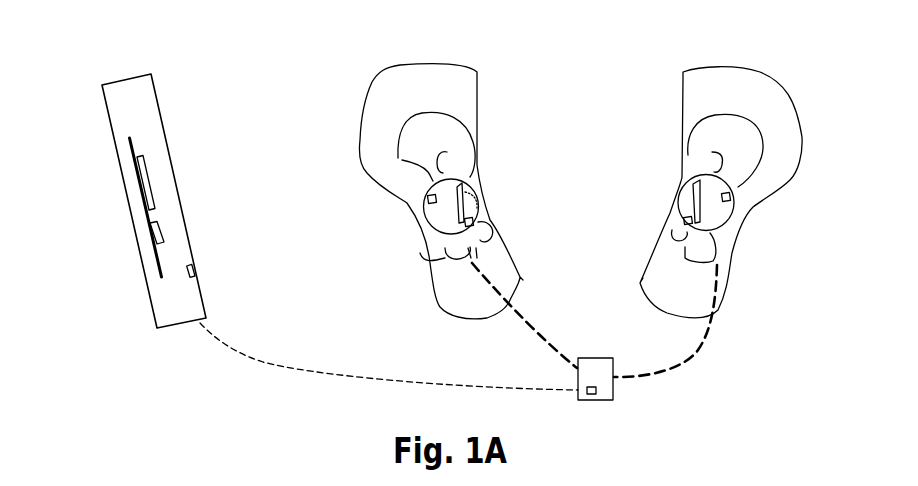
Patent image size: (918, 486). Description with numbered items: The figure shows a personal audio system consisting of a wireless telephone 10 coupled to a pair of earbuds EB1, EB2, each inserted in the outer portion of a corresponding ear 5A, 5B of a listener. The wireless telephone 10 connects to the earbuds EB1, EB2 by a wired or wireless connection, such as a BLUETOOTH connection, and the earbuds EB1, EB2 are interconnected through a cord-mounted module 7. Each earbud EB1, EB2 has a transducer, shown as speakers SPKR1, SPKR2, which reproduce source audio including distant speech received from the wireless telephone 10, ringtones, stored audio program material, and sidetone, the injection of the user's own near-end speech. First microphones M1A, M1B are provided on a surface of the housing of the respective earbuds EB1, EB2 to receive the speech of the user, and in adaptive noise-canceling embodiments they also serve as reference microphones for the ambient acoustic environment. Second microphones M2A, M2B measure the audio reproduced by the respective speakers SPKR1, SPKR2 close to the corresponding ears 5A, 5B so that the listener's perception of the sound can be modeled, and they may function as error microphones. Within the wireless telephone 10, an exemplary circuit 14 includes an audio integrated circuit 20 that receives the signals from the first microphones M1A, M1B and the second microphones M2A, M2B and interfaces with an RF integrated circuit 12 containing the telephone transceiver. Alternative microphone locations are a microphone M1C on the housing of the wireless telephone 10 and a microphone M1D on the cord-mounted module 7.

The wireless telephone 10 is at (112, 110).
The RF integrated circuit 12 is at (163, 230).
The circuit 14 is at (162, 278).
The audio integrated circuit 20 is at (140, 168).
The microphone M1C is at (197, 268).
The ear 5A is at (432, 62).
The ear 5B is at (733, 70).
The earbud EB1 is at (402, 160).
The earbud EB2 is at (687, 181).
The speaker SPKR1 is at (462, 196).
The speaker SPKR2 is at (693, 195).
The first microphone M1A is at (428, 200).
The second microphone M2A is at (466, 227).
The first microphone M1B is at (730, 197).
The second microphone M2B is at (685, 222).
The cord-mounted module 7 is at (613, 390).
The microphone M1D is at (590, 395).